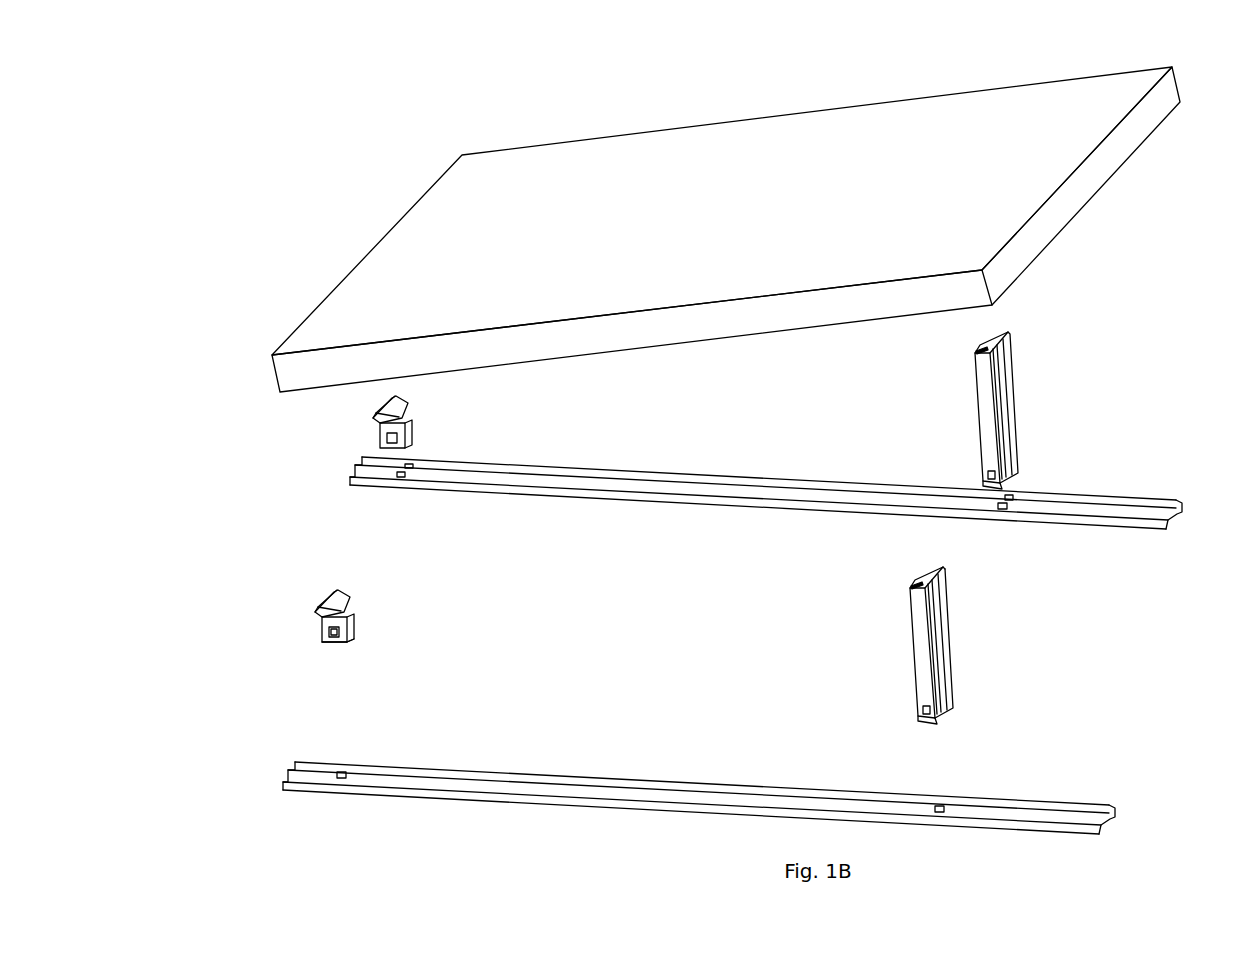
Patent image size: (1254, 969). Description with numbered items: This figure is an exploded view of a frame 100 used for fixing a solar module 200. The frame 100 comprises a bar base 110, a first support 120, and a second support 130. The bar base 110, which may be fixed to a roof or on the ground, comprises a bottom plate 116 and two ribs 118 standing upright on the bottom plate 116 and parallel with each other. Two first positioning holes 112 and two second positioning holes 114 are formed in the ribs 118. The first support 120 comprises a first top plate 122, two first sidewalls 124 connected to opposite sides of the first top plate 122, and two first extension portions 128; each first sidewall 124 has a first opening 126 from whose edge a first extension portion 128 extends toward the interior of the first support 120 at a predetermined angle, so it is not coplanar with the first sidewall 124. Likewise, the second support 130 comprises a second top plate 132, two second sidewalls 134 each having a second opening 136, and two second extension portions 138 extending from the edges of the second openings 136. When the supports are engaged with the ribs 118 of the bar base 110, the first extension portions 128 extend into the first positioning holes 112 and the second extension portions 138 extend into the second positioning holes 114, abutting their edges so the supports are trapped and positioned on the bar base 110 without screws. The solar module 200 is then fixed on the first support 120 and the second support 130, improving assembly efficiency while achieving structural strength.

The frame 100 is at (315, 97).
The solar module 200 is at (1135, 130).
The bar base 110 is at (707, 812).
The first positioning holes 112 is at (348, 767).
The second positioning holes 114 is at (947, 797).
The bottom plate 116 is at (1105, 828).
The ribs 118 is at (1044, 818).
The first support 120 is at (401, 619).
The first top plate 122 is at (334, 551).
The first sidewalls 124 is at (396, 614).
The first opening 126 is at (396, 669).
The first extension portions 128 is at (335, 696).
The second support 130 is at (858, 600).
The second top plate 132 is at (924, 503).
The second sidewalls 134 is at (878, 642).
The second opening 136 is at (862, 678).
The second extension portions 138 is at (928, 749).